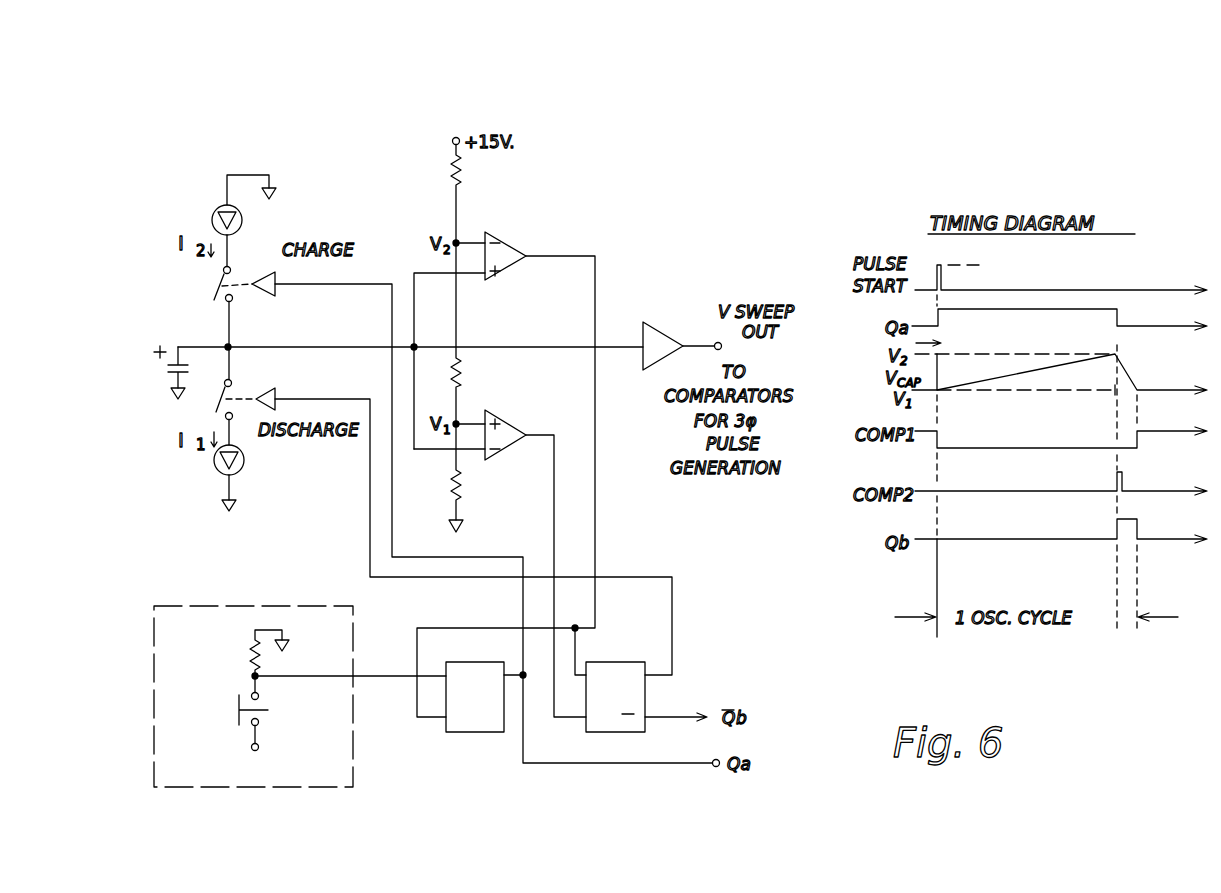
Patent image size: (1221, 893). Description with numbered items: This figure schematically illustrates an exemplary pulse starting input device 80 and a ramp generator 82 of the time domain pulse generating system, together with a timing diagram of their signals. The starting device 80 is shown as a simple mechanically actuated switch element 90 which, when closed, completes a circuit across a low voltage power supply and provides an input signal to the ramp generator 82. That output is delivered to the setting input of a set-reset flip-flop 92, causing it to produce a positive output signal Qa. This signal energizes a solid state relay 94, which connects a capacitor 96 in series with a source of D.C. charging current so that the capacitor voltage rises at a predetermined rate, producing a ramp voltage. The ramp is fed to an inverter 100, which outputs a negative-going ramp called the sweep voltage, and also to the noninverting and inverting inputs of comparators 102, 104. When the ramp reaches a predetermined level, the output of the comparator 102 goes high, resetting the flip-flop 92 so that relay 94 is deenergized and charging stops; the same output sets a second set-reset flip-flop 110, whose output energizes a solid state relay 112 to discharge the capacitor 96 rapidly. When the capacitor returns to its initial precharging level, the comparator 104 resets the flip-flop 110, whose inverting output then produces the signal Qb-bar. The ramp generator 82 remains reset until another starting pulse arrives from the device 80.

The pulse starting input device 80 is at (300, 726).
The ramp generator 82 is at (506, 440).
The switch element 90 is at (236, 720).
The set-reset flip-flop 92 is at (486, 733).
The solid state relay 94 is at (262, 298).
The capacitor 96 is at (170, 364).
The inverter 100 is at (675, 320).
The comparator 102 is at (510, 270).
The comparator 104 is at (500, 412).
The set-reset flip-flop 110 is at (645, 700).
The solid state relay 112 is at (275, 386).